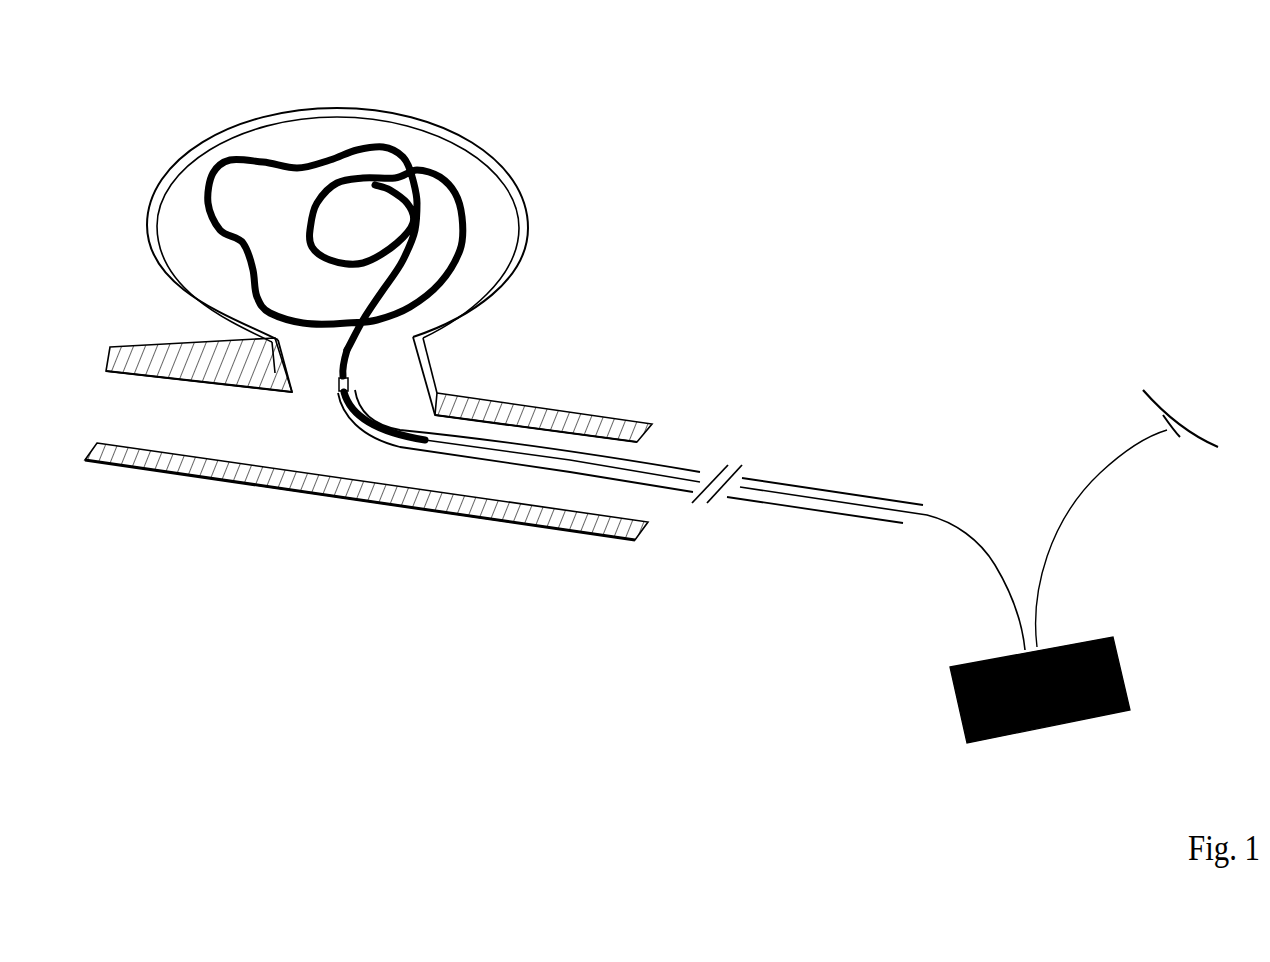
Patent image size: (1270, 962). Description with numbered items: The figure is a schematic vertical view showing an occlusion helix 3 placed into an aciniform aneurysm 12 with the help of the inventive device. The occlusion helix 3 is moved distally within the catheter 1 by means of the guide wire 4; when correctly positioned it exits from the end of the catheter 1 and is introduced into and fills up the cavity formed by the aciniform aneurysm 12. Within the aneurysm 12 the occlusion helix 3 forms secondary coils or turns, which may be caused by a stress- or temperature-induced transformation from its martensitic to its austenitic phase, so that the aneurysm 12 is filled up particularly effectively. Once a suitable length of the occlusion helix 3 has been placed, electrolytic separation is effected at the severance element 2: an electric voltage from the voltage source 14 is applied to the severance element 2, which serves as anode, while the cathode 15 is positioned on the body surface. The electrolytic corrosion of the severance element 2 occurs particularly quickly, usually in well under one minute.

The catheter 1 is at (847, 495).
The severance element 2 is at (348, 373).
The occlusion helix 3 is at (397, 143).
The guide wire 4 is at (772, 493).
The aciniform aneurysm 12 is at (513, 160).
The voltage source 14 is at (1117, 642).
The cathode 15 is at (1163, 422).